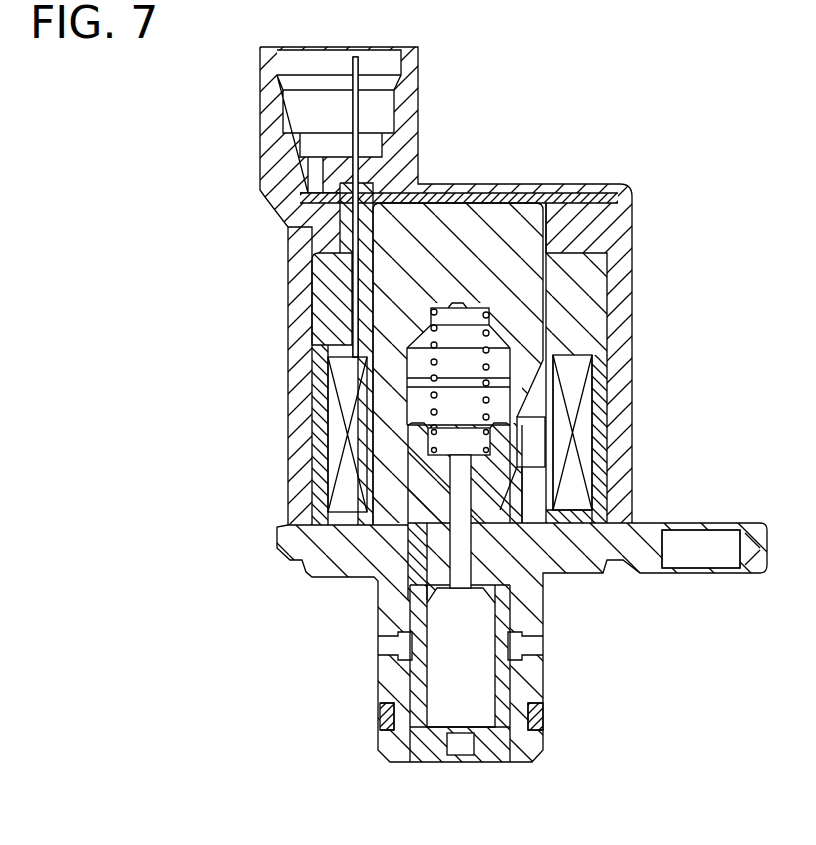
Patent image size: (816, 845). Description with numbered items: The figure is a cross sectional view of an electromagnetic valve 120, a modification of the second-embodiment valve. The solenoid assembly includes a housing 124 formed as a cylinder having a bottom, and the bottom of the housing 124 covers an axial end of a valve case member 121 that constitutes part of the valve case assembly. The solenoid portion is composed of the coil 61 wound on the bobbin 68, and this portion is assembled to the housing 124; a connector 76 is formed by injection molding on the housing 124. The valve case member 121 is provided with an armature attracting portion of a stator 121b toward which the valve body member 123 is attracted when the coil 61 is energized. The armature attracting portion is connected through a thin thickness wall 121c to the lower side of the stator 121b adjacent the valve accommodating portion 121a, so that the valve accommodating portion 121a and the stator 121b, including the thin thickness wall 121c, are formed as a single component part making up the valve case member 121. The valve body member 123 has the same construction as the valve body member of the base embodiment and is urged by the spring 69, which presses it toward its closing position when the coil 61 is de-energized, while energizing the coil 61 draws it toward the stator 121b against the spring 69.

The electromagnetic valve 120 is at (664, 126).
The connector 76 is at (418, 80).
The housing 124 is at (627, 267).
The stator 121b is at (492, 218).
The bobbin 68 is at (603, 303).
The coil 61 is at (578, 368).
The thin thickness wall 121c is at (513, 445).
The valve case member 121 is at (535, 610).
The valve accommodating portion 121a is at (535, 668).
The valve body member 123 is at (423, 603).
The spring 69 is at (433, 362).